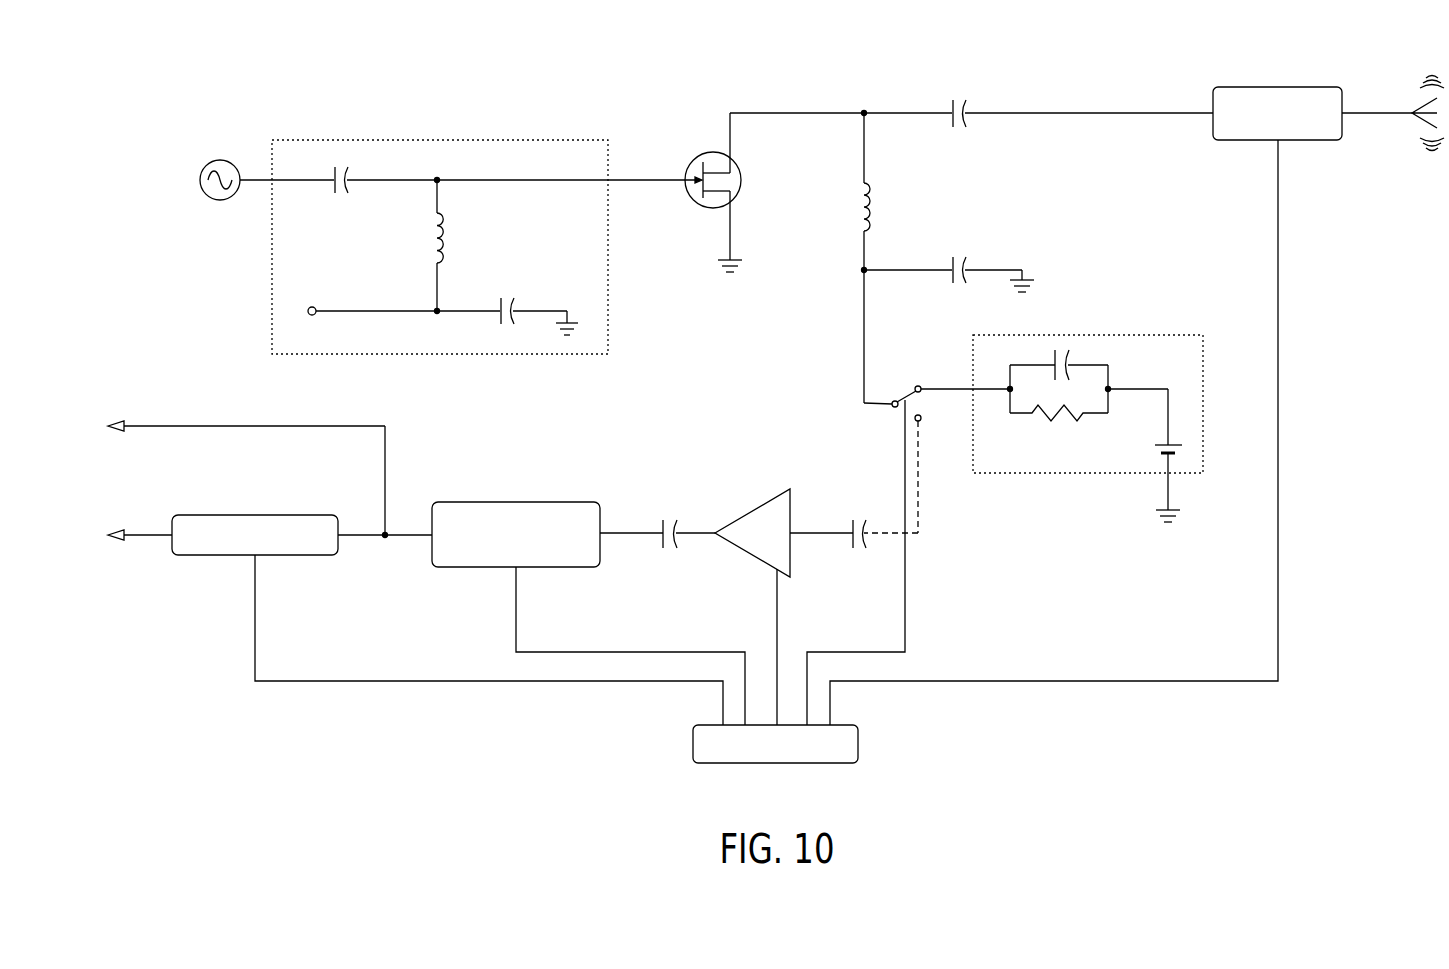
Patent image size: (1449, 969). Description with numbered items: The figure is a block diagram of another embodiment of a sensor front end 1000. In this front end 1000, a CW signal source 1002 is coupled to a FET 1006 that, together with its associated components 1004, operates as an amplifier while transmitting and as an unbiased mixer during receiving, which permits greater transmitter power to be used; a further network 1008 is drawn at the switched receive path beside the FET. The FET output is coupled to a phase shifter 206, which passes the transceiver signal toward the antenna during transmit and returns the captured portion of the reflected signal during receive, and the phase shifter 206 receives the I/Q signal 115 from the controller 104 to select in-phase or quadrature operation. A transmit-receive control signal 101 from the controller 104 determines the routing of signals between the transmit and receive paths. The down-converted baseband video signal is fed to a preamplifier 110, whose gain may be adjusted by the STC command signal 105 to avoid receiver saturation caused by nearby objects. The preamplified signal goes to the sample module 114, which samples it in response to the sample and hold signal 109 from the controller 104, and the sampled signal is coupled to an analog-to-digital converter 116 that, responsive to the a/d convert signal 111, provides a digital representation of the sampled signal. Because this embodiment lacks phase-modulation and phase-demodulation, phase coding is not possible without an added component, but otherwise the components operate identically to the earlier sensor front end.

The sensor front end 1000 is at (1104, 75).
The CW signal source 1002 is at (211, 162).
The associated components 1004 is at (572, 147).
The FET 1006 is at (739, 197).
The RC network with battery 1008 is at (1168, 340).
The phase shifter 206 is at (1262, 125).
The analog-to-digital converter 116 is at (308, 514).
The sample module 114 is at (573, 501).
The preamplifier 110 is at (752, 545).
The sample and hold signal 109 is at (518, 606).
The STC command signal 105 is at (779, 612).
The transmit-receive control signal 101 is at (907, 624).
The a/d convert signal 111 is at (415, 686).
The I/Q signal 115 is at (1150, 682).
The controller 104 is at (858, 748).